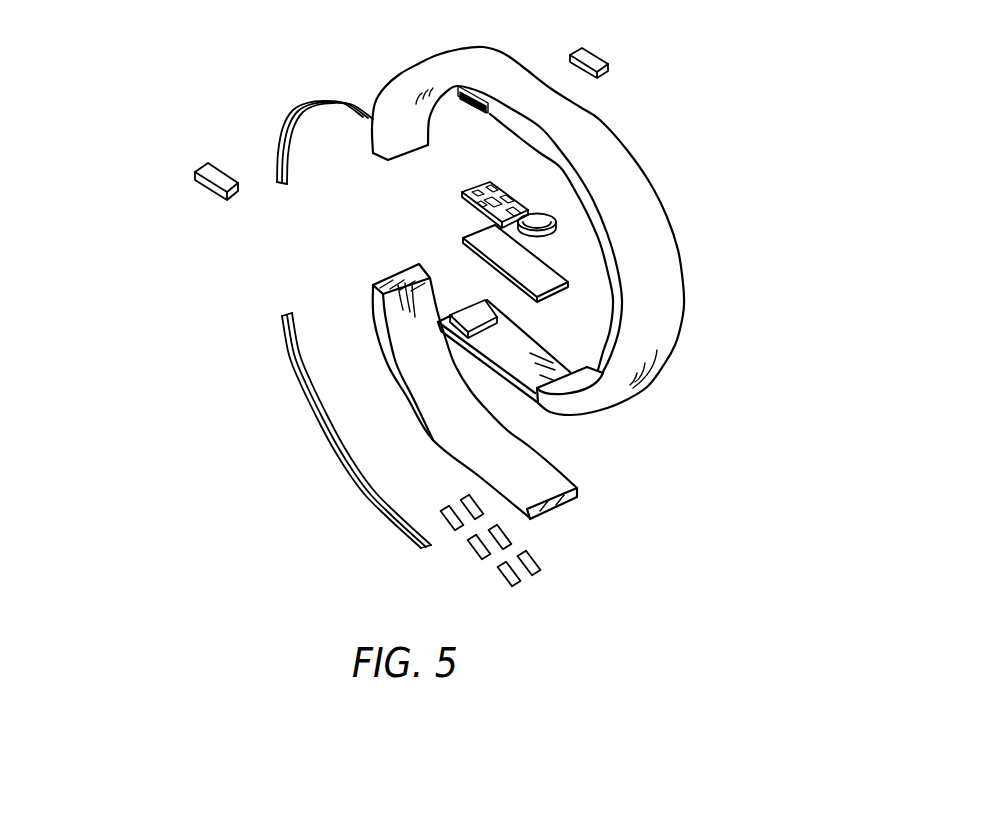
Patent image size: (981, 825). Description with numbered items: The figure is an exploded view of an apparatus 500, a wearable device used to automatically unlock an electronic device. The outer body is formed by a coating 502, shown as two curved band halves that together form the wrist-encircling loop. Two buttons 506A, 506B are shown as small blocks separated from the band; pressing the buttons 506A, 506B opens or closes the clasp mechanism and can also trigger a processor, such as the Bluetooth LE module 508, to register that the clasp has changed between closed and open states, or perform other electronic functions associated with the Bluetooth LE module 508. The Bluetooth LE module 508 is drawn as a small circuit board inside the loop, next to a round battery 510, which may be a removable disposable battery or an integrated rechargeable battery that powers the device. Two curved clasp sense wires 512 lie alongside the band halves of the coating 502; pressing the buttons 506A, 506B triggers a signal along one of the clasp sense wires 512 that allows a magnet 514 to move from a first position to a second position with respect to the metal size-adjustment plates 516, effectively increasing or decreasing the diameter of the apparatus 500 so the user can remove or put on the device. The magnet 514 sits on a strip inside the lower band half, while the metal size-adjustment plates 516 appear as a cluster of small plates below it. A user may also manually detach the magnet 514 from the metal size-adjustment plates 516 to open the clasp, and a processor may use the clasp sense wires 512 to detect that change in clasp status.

The apparatus 500 is at (90, 73).
The coating 502 is at (437, 56).
The button 506A is at (197, 172).
The button 506B is at (596, 56).
The Bluetooth LE module 508 is at (474, 185).
The battery 510 is at (545, 240).
The clasp sense wires 512 is at (291, 112).
The magnet 514 is at (467, 303).
The metal size-adjustment plates 516 is at (512, 537).